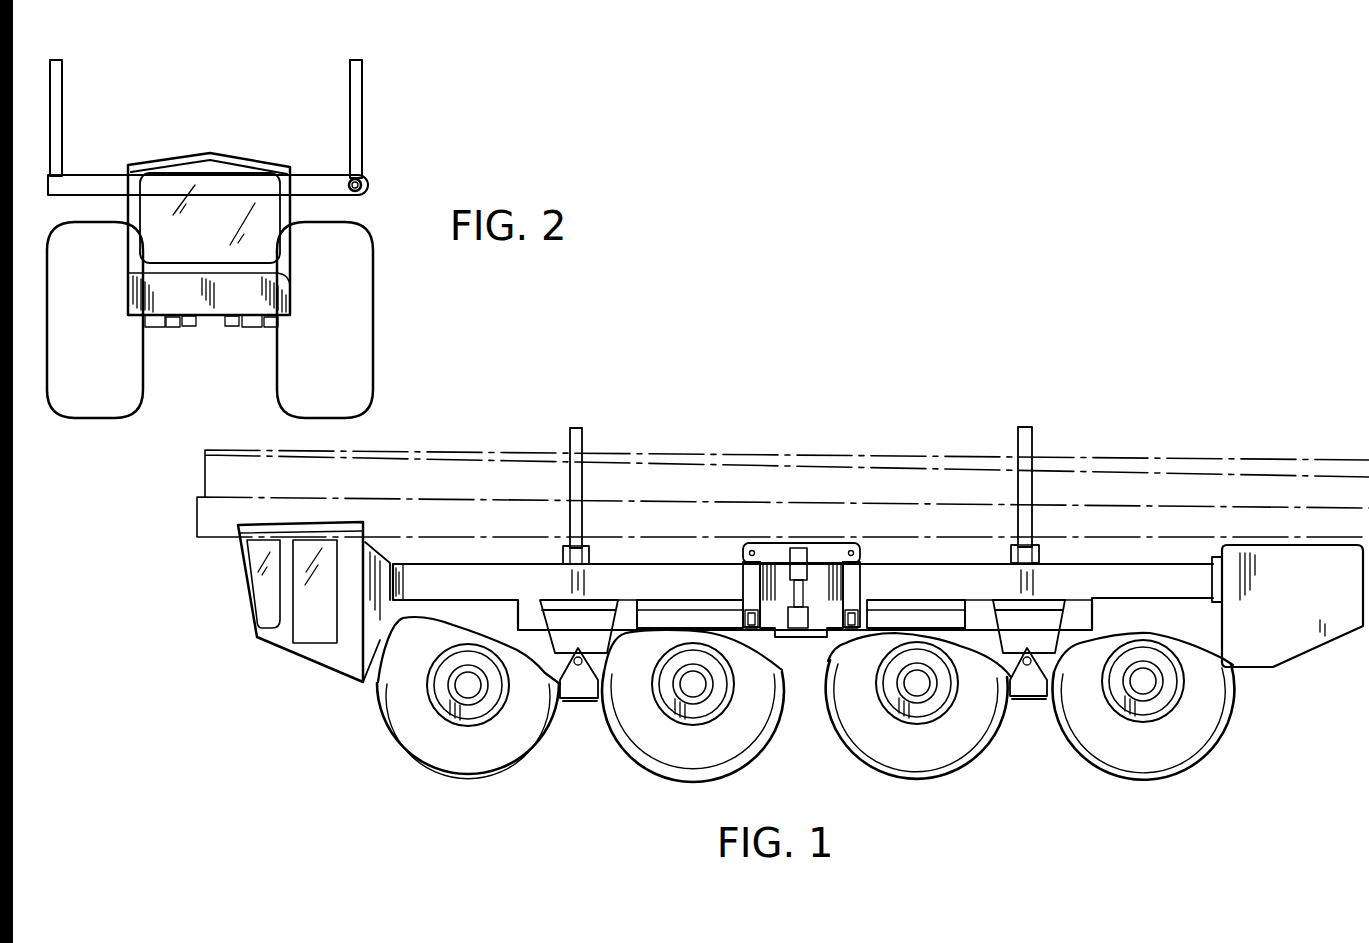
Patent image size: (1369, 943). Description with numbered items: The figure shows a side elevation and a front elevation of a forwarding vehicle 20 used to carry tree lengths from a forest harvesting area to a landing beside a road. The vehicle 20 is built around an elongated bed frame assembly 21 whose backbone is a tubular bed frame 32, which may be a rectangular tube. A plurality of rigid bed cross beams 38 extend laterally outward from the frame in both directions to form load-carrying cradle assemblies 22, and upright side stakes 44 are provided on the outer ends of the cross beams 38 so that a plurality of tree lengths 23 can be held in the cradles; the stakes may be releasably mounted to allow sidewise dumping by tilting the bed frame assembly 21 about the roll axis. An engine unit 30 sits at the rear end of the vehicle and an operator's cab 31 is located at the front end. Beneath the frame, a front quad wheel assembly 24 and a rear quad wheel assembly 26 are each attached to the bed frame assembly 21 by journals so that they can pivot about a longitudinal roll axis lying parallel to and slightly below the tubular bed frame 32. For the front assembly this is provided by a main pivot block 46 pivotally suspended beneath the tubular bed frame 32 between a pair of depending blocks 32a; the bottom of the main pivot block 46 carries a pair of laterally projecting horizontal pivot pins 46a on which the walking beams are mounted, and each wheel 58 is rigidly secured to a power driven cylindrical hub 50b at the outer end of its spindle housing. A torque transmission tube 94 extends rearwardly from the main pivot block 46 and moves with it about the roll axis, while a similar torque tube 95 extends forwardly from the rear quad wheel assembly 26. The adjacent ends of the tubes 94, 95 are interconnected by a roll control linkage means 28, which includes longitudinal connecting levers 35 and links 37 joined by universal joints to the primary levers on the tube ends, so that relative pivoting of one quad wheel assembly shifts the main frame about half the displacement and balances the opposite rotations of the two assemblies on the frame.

In FIG. 2, the vehicle 20 is at (239, 152).
In FIG. 1, the vehicle 20 is at (1240, 695).
In FIG. 1, the elongated bed frame assembly 21 is at (1095, 545).
In FIG. 2, the load-carrying cradle assemblies 22 is at (378, 182).
In FIG. 1, the load-carrying cradle assemblies 22 is at (598, 539).
In FIG. 1, the tree lengths 23 is at (1250, 460).
In FIG. 1, the front quad wheel assembly 24 is at (630, 766).
In FIG. 1, the rear quad wheel assembly 26 is at (1222, 745).
In FIG. 1, the roll control linkage means 28 is at (801, 647).
In FIG. 1, the engine unit 30 is at (1314, 598).
In FIG. 2, the operator's cab 31 is at (215, 228).
In FIG. 1, the operator's cab 31 is at (292, 591).
In FIG. 1, the tubular bed frame 32 is at (1121, 580).
In FIG. 1, the depending blocks 32a is at (623, 610).
In FIG. 1, the longitudinal connecting lever 35 is at (837, 544).
In FIG. 1, the links 37 is at (752, 573).
In FIG. 2, the rigid bed cross beams 38 is at (302, 187).
In FIG. 1, the rigid bed cross beams 38 is at (590, 559).
In FIG. 2, the upright side stakes 44 is at (350, 90).
In FIG. 1, the upright side stakes 44 is at (570, 430).
In FIG. 1, the main pivot block 46 is at (560, 644).
In FIG. 1, the horizontal pivot pins 46a is at (578, 668).
In FIG. 1, the power driven cylindrical hub 50b is at (467, 695).
In FIG. 2, the wheel 58 is at (373, 337).
In FIG. 1, the wheel 58 is at (652, 773).
In FIG. 1, the torque transmission tube 94 is at (675, 617).
In FIG. 1, the torque tube 95 is at (902, 620).